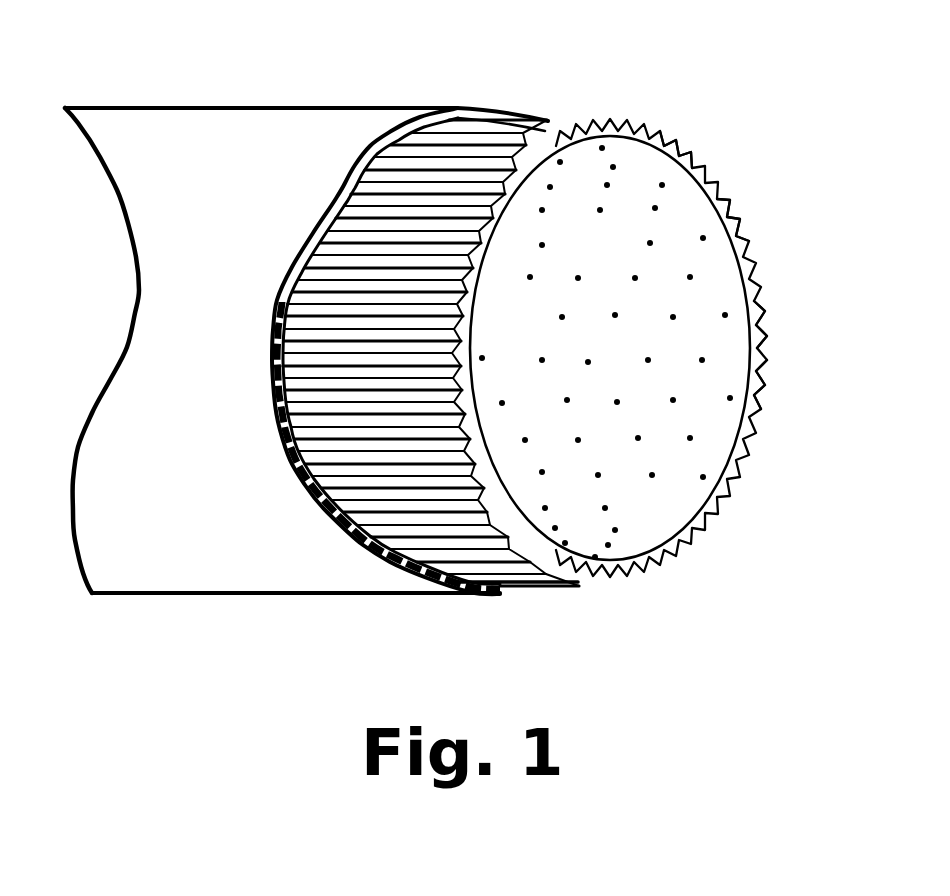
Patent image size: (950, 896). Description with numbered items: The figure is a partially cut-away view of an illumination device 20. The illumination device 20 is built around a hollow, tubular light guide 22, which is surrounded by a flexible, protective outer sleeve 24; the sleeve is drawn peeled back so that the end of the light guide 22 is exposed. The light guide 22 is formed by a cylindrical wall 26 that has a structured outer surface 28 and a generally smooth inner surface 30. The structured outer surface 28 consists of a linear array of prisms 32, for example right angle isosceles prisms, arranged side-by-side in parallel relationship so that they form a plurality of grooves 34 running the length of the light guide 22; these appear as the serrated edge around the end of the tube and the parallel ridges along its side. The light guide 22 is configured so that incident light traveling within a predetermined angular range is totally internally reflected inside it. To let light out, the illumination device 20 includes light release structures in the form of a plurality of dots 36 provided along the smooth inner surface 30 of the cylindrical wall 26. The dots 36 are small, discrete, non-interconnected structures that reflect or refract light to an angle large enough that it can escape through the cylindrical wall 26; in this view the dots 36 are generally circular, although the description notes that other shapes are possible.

The illumination device 20 is at (657, 96).
The light guide 22 is at (628, 575).
The outer sleeve 24 is at (412, 585).
The cylindrical wall 26 is at (740, 223).
The structured outer surface 28 is at (687, 150).
The inner surface 30 is at (718, 423).
The prisms 32 is at (765, 395).
The grooves 34 is at (763, 323).
The dots 36 is at (593, 240).